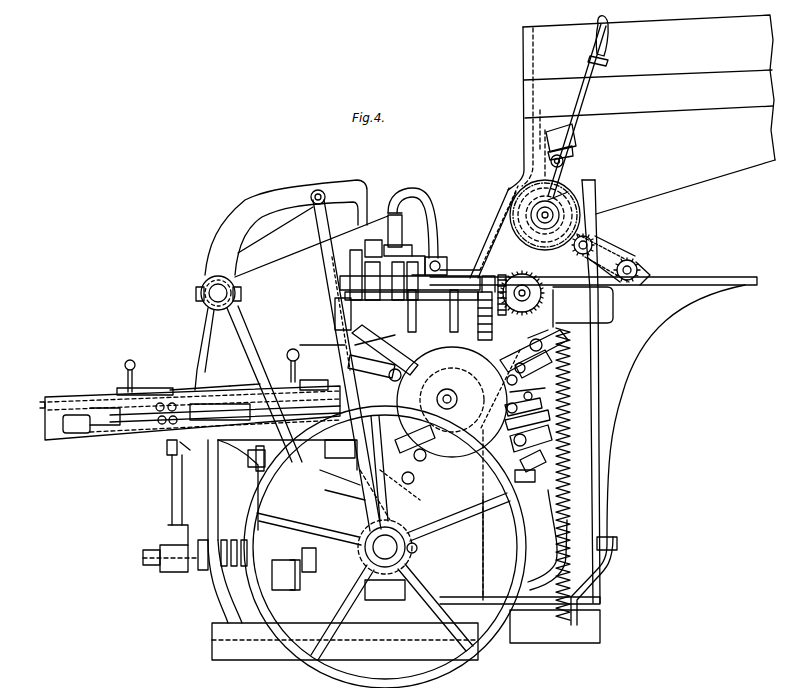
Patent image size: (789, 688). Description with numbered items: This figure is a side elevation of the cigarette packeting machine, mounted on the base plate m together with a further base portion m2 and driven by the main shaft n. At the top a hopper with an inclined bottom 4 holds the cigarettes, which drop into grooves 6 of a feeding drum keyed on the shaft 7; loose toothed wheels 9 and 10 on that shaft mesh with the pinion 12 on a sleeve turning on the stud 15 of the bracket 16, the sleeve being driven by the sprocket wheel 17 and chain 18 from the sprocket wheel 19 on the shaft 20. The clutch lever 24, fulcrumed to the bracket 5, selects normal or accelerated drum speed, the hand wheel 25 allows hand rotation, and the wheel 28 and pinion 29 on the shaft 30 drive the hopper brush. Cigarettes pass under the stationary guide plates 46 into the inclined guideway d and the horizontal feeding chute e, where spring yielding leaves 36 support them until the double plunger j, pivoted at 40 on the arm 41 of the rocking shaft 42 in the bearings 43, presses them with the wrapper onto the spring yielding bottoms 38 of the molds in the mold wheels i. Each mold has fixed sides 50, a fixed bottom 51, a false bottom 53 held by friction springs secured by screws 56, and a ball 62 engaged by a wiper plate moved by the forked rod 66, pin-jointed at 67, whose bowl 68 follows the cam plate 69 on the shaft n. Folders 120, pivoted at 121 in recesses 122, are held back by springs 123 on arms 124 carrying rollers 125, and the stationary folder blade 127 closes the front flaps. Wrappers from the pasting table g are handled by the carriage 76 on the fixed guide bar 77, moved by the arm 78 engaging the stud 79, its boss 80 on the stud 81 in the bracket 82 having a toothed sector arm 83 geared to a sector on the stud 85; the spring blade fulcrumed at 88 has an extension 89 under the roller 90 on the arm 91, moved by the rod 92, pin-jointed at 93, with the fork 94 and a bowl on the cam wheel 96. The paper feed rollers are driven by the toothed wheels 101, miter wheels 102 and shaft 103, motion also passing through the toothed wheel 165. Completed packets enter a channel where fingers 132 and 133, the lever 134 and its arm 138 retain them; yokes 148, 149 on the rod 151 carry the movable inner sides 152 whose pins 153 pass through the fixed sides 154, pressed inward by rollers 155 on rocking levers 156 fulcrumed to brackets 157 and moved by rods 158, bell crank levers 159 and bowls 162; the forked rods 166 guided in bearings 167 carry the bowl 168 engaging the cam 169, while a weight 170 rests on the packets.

The inclined bottom 4 is at (690, 192).
The grooves 6 is at (641, 102).
The bracket 5 is at (570, 144).
The clutch lever 24 is at (604, 44).
The wheel 28 is at (575, 153).
The pinion 29 is at (565, 164).
The shaft 30 is at (550, 161).
The toothed wheel 9 is at (578, 187).
The toothed wheel 10 is at (574, 184).
The shaft 7 is at (560, 216).
The hand wheel 25 is at (536, 222).
The stationary guide plates 46 is at (492, 240).
The inclined guideway d is at (496, 235).
The stud 15 is at (594, 243).
The sprocket wheel 17 is at (606, 252).
The chain 18 is at (626, 255).
The bracket 16 is at (604, 266).
The sprocket wheel 19 is at (638, 268).
The shaft 20 is at (640, 274).
The double plunger j is at (455, 275).
The spring yielding leaves 36 is at (469, 259).
The toothed wheels 101 is at (483, 278).
The miter wheels 102 is at (510, 285).
The shaft 103 is at (525, 290).
The toothed wheel 165 is at (496, 316).
The spring yielding bottoms 38 is at (520, 338).
The fixed sides 50 is at (570, 392).
The folders 120 is at (578, 360).
The pivot 121 is at (555, 347).
The recesses 122 is at (555, 372).
The bowls or rollers 125 is at (508, 376).
The screws 56 is at (522, 396).
The springs 123 is at (507, 408).
The movable or false bottom 53 is at (506, 422).
The arms 124 is at (453, 393).
The ball 62 is at (540, 462).
The fixed bottom 51 is at (530, 474).
The mold wheels i is at (515, 472).
The pin joint 67 is at (452, 402).
The arm 91 is at (272, 202).
The pin joint 93 is at (320, 190).
The arm 41 is at (290, 250).
The rocking shaft 42 is at (205, 300).
The bearings 43 is at (240, 294).
The rod 92 is at (330, 258).
The roller 90 is at (395, 205).
The backward extension 89 is at (399, 224).
The fulcrum 88 is at (374, 248).
The horizontal feeding chute e is at (423, 261).
The pivot 40 is at (438, 257).
The pin or stud 79 is at (352, 262).
The fixed guide bar 77 is at (386, 277).
The horizontal pasting table g is at (412, 279).
The carriage 76 is at (342, 300).
The arm 78 is at (314, 340).
The yoke 148 is at (365, 376).
The main driving shaft n is at (385, 547).
The bowl 68 is at (452, 505).
The fork 94 is at (416, 552).
The cam plate 69 is at (385, 507).
The cam 169 is at (385, 590).
The bowl 168 is at (329, 565).
The stud 85 is at (307, 575).
The stationary folder blade 127 is at (415, 439).
The forked rod 66 is at (427, 452).
The cam wheel 96 is at (419, 476).
The toothed pinion 12 is at (443, 466).
The bell crank levers 159 is at (340, 480).
The bowls 162 is at (345, 497).
The boss 80 is at (340, 454).
The fingers 133 is at (328, 455).
The stud 81 is at (248, 458).
The bracket 82 is at (262, 500).
The arm 138 is at (226, 535).
The toothed sector arm 83 is at (280, 558).
The base plate m is at (212, 634).
The base m2 is at (520, 566).
The bearings 167 is at (203, 570).
The forked rods 166 is at (143, 552).
The fixed sides 154 is at (52, 416).
The brackets 157 is at (91, 418).
The rollers 155 is at (157, 419).
The rods 158 is at (220, 406).
The movable inner sides 152 is at (172, 392).
The rocking levers 156 is at (212, 390).
The weight 170 is at (158, 392).
The lever 134 is at (303, 364).
The fingers 132 is at (316, 380).
The yoke 149 is at (167, 444).
The pins 153 is at (193, 451).
The rod 151 is at (172, 470).